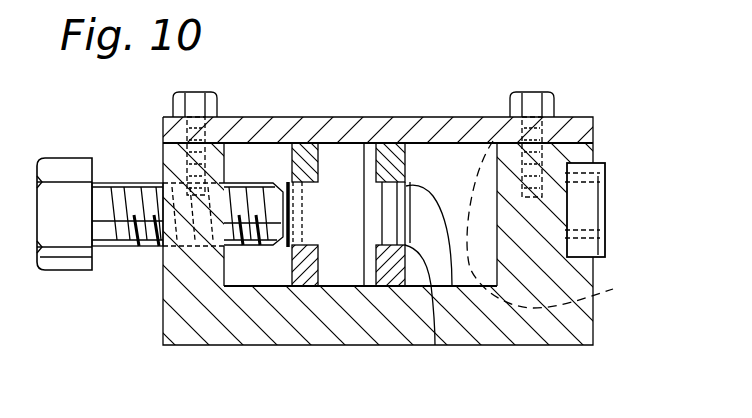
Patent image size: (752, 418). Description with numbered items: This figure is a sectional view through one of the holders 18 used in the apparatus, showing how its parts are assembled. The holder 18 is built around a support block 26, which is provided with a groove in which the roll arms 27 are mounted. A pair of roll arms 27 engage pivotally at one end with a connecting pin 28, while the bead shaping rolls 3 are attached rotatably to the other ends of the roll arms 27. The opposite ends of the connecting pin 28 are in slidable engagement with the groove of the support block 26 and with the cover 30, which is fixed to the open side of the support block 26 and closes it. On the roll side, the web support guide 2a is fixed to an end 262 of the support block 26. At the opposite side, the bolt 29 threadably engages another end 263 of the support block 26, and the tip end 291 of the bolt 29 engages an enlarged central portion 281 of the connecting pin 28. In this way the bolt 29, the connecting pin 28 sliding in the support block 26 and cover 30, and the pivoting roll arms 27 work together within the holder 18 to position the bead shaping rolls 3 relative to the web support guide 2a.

The holder 18 is at (494, 76).
The web support guide 2a is at (605, 210).
The bead shaping roll 3 is at (550, 224).
The support block 26 is at (260, 346).
The roll arm 27 is at (447, 148).
The connecting pin 28 is at (358, 147).
The bolt 29 is at (76, 271).
The cover 30 is at (248, 118).
The end of the support block 262 is at (593, 343).
The another end of the support block 263 is at (163, 309).
The enlarged central portion 281 is at (435, 346).
The tip end 291 is at (263, 183).